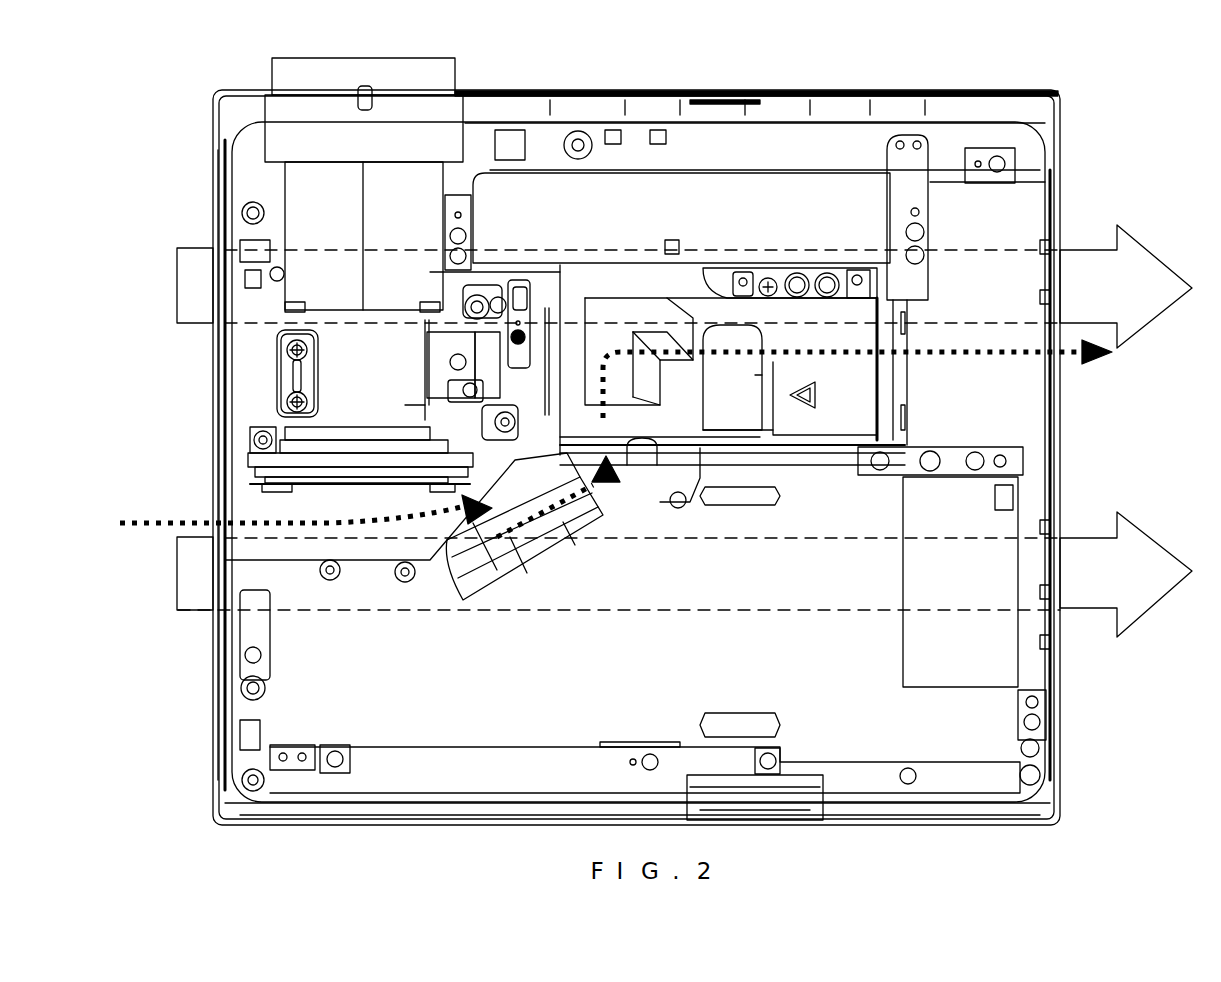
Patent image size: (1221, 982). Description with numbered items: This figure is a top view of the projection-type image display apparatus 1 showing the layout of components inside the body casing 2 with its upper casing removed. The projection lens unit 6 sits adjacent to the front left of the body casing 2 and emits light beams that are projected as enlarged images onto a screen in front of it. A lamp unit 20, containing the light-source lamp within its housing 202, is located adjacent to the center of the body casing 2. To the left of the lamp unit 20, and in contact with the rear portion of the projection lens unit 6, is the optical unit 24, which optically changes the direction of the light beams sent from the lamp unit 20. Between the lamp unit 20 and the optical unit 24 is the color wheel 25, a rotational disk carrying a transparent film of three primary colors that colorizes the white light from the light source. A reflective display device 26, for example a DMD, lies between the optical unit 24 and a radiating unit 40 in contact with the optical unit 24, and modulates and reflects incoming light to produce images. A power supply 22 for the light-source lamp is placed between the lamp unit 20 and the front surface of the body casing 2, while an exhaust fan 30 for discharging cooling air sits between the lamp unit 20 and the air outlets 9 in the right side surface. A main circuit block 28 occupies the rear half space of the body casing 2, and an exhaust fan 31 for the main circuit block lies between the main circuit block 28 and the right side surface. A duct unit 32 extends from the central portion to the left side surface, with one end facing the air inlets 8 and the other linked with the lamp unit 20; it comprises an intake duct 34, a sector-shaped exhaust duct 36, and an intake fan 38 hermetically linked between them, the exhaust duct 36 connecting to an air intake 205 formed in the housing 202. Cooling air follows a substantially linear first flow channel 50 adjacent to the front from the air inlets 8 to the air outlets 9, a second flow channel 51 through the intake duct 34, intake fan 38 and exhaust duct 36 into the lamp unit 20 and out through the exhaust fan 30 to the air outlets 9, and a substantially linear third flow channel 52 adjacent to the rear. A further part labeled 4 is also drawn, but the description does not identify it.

The projection-type image display apparatus 1 is at (659, 70).
The body casing 2 is at (716, 73).
The lower case 4 is at (213, 739).
The projection lens unit 6 is at (460, 72).
The air inlets 8 is at (220, 415).
The air outlets 9 is at (1056, 438).
The lamp unit 20 is at (820, 328).
The power supply 22 is at (760, 220).
The optical unit 24 is at (348, 377).
The color wheel 25 is at (560, 280).
The reflective display device 26 is at (235, 460).
The main circuit block 28 is at (425, 722).
The exhaust fan 30 is at (958, 245).
The exhaust fan for the main circuit block 31 is at (962, 587).
The duct unit 32 is at (462, 593).
The intake duct 34 is at (357, 560).
The exhaust duct 36 is at (633, 507).
The intake fan 38 is at (497, 540).
The radiating unit 40 is at (355, 485).
The first flow channel 50 is at (1143, 246).
The second flow channel 51 is at (1000, 368).
The third flow channel 52 is at (1143, 536).
The housing 202 is at (800, 447).
The air intake 205 is at (655, 452).